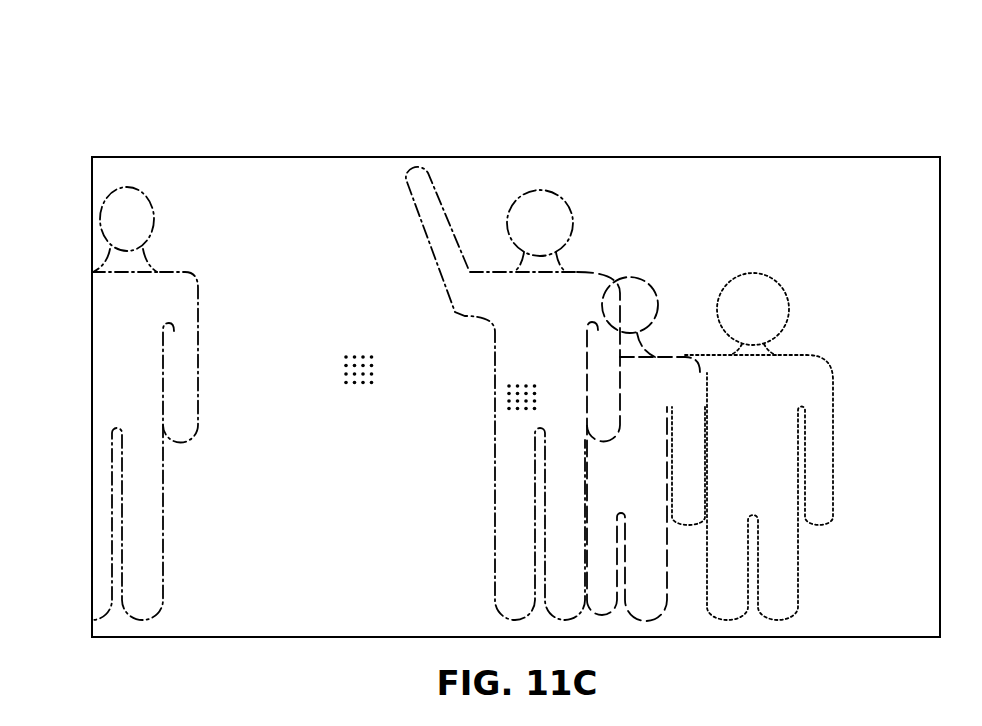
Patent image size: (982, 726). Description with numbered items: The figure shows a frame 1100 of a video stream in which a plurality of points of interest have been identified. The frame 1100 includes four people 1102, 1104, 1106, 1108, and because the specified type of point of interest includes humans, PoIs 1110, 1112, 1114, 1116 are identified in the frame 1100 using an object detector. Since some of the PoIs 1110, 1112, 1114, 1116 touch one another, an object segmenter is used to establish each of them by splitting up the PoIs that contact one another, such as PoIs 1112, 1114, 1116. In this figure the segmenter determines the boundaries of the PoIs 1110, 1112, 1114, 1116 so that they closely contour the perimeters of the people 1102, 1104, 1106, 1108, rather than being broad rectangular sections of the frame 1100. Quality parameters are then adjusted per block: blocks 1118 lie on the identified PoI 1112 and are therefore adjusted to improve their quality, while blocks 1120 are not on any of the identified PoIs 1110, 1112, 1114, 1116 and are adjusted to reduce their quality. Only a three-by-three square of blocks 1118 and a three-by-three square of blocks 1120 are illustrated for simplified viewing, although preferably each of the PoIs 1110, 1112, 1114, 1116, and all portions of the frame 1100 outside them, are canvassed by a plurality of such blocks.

The frame 1100 is at (107, 100).
The person 1102 is at (150, 190).
The person 1104 is at (508, 195).
The person 1106 is at (645, 268).
The person 1108 is at (774, 268).
The PoI 1110 is at (203, 263).
The PoI 1112 is at (402, 288).
The PoI 1114 is at (608, 265).
The PoI 1116 is at (830, 265).
The blocks 1118 is at (503, 407).
The blocks 1120 is at (342, 346).